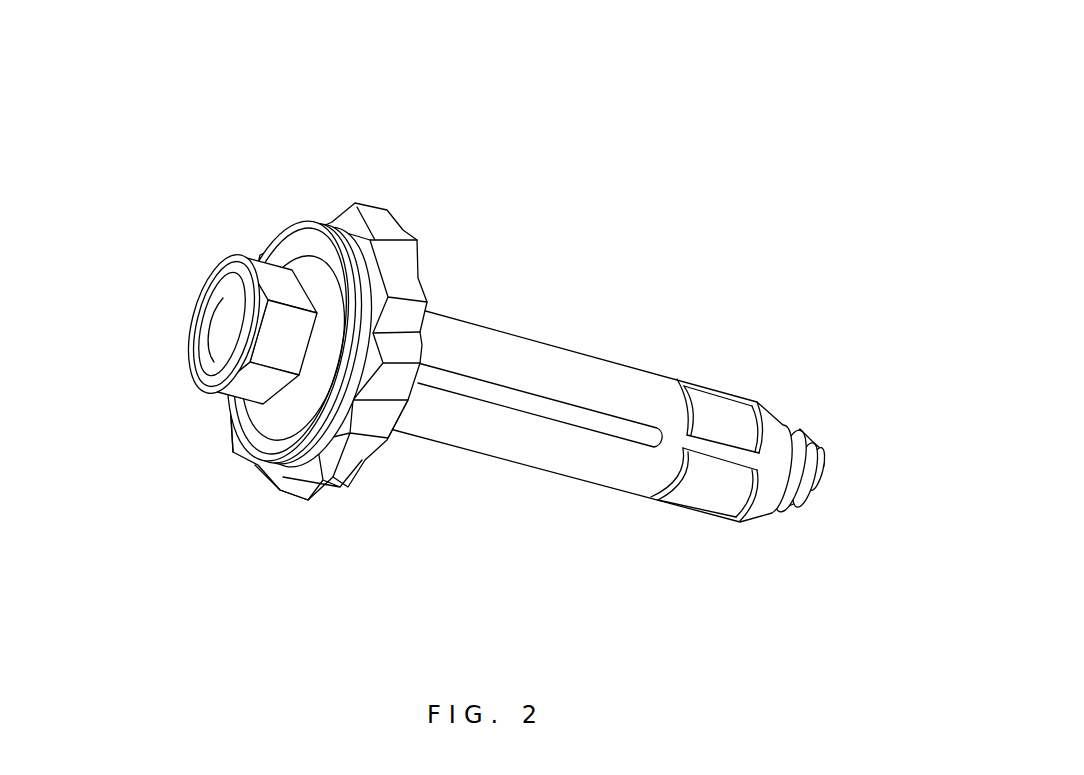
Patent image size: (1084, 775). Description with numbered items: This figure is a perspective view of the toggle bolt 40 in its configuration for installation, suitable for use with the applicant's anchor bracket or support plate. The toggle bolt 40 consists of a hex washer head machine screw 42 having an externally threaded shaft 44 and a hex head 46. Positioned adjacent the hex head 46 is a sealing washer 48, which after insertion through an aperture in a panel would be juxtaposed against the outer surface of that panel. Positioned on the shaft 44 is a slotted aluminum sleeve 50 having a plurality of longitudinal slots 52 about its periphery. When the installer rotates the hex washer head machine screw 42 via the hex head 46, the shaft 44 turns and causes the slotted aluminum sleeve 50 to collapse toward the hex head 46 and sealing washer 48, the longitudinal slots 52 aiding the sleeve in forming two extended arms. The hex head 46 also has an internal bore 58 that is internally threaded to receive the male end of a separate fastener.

The toggle bolt 40 is at (261, 179).
The hex washer head machine screw 42 is at (334, 295).
The externally threaded shaft 44 is at (826, 463).
The hex head 46 is at (210, 390).
The sealing washer 48 is at (400, 233).
The slotted aluminum sleeve 50 is at (547, 367).
The longitudinal slots 52 is at (490, 397).
The internal bore 58 is at (203, 297).